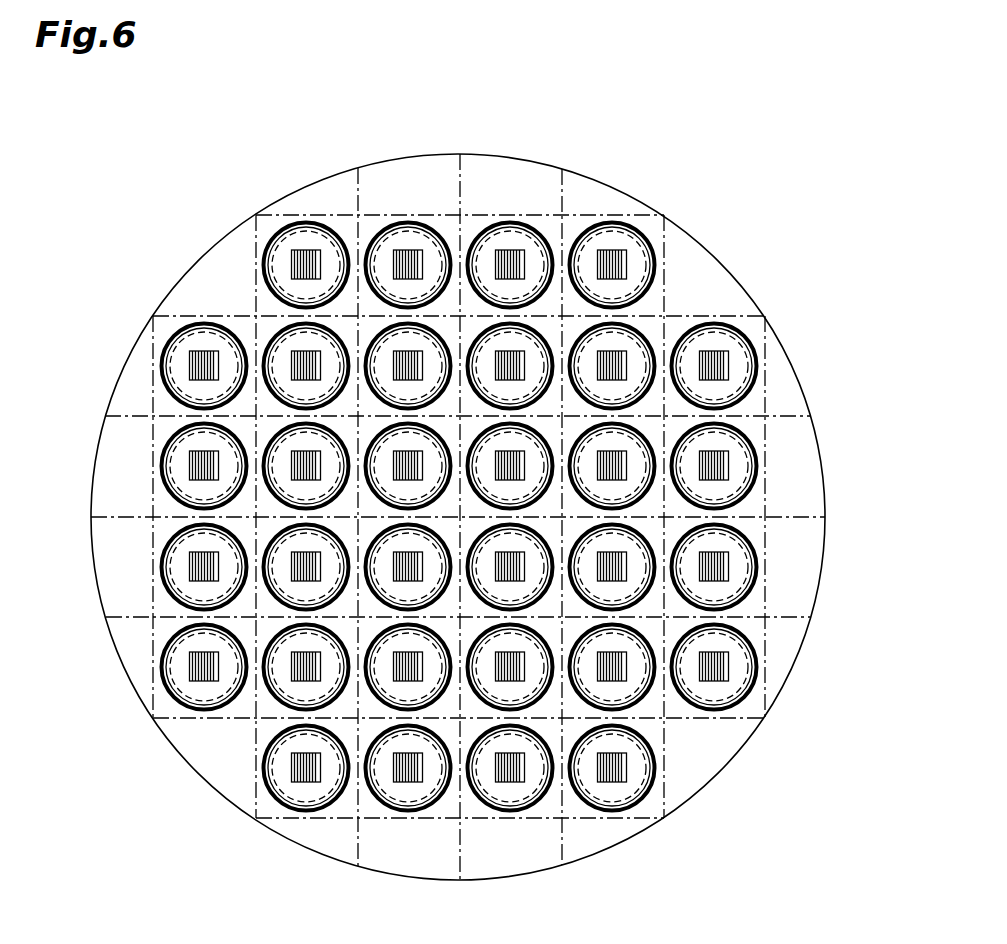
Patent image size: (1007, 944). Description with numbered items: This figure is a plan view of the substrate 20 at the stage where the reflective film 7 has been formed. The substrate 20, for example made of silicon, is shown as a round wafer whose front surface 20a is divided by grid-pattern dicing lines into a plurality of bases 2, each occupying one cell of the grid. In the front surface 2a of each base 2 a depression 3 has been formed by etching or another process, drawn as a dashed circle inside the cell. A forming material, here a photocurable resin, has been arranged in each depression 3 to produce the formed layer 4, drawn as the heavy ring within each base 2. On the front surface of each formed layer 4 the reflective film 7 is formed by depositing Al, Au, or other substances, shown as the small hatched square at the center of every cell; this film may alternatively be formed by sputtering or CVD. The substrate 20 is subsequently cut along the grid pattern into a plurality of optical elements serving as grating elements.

The substrate 20 is at (712, 253).
The front surface of the substrate 20a is at (218, 750).
The base 2 is at (512, 214).
The front surface of the base 2a is at (574, 224).
The depression 3 is at (385, 262).
The formed layer 4 is at (410, 222).
The reflective film 7 is at (300, 246).